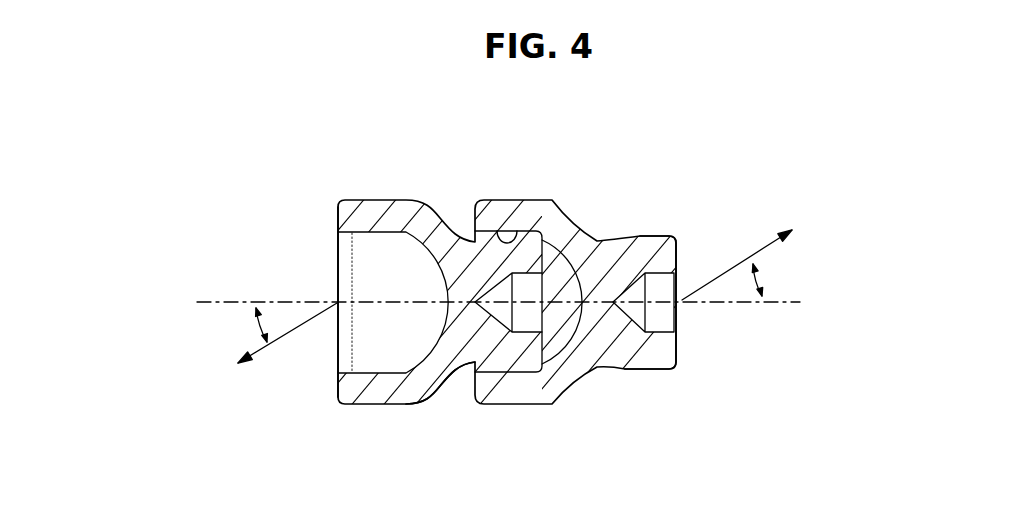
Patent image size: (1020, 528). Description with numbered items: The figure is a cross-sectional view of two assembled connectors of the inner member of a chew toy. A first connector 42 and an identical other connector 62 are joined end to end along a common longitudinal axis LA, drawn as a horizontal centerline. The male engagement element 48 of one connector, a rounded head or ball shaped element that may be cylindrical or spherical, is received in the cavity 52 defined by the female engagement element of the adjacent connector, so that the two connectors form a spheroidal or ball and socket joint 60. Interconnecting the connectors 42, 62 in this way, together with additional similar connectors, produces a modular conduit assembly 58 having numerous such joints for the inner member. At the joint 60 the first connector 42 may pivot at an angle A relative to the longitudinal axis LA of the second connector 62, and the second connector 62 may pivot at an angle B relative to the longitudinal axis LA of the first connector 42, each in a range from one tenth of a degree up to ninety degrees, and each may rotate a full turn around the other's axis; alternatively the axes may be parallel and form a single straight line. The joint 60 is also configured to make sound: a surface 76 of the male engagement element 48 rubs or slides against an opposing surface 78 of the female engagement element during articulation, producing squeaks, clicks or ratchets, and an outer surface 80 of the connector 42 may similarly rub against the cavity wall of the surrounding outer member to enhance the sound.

The modular conduit assembly 58 is at (435, 155).
The surface of connector 80 is at (382, 197).
The other connector 62 is at (340, 405).
The spheroidal joint 60 is at (448, 402).
The surface of male engagement element 76 is at (517, 353).
The opposing surface of female engagement element 78 is at (496, 235).
The cavity 52 is at (553, 267).
The male engagement element 48 is at (535, 355).
The connector 42 is at (665, 232).
The angle A is at (739, 265).
The angle B is at (279, 333).
The longitudinal axis LA is at (500, 298).